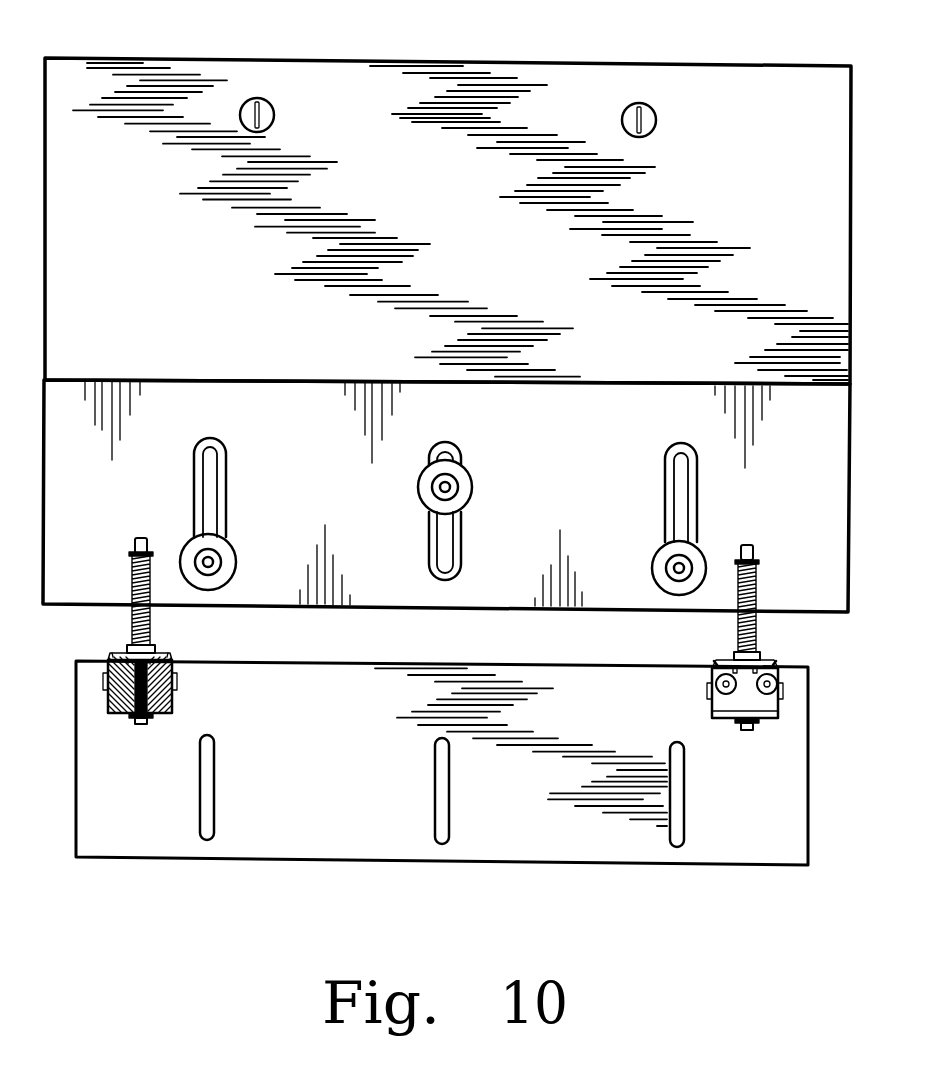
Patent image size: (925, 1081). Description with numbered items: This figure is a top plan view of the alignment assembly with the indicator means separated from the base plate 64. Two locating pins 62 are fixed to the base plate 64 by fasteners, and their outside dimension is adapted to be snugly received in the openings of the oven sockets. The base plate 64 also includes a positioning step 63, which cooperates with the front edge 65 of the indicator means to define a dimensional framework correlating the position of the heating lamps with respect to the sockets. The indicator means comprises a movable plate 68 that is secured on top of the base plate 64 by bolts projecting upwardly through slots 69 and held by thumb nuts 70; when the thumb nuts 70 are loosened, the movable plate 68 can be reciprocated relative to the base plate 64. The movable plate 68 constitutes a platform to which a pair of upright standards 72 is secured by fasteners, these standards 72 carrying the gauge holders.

The locating pin 62 is at (275, 115).
The positioning step 63 is at (295, 388).
The base plate 64 is at (588, 78).
The front edge 65 is at (313, 652).
The movable plate 68 is at (330, 843).
The slots 69 is at (210, 792).
The thumb nuts 70 is at (237, 562).
The upright standards 72 is at (173, 707).